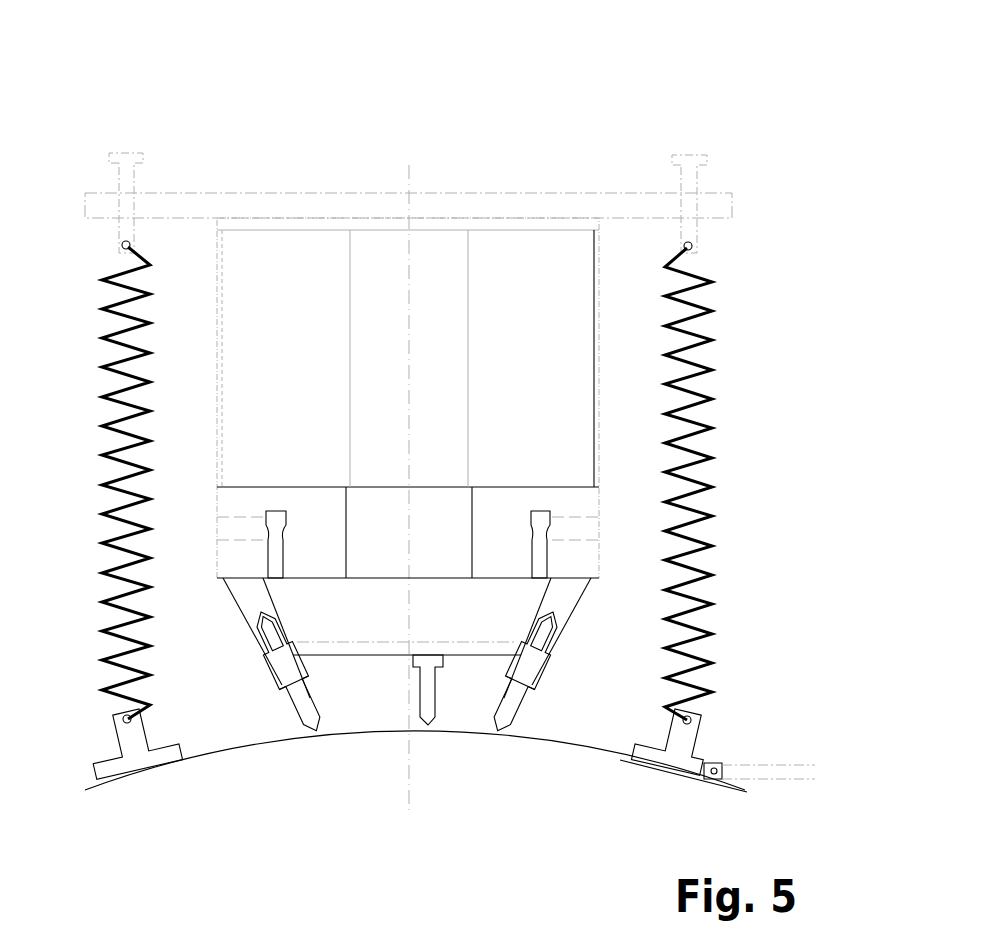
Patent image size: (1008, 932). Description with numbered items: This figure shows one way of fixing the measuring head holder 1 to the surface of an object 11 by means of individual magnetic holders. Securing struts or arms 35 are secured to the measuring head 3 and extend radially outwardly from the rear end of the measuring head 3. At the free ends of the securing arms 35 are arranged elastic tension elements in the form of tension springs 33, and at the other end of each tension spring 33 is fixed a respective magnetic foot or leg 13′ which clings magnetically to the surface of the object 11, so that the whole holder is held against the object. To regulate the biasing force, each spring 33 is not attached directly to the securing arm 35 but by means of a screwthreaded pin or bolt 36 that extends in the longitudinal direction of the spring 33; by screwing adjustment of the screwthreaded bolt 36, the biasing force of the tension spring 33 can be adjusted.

The measuring head holder 1 is at (80, 110).
The measuring head 3 is at (594, 368).
The object 11 is at (288, 747).
The magnetic foot 13′ is at (757, 718).
The tension spring 33 is at (713, 428).
The securing strut 35 is at (622, 202).
The screwthreaded bolt 36 is at (690, 181).